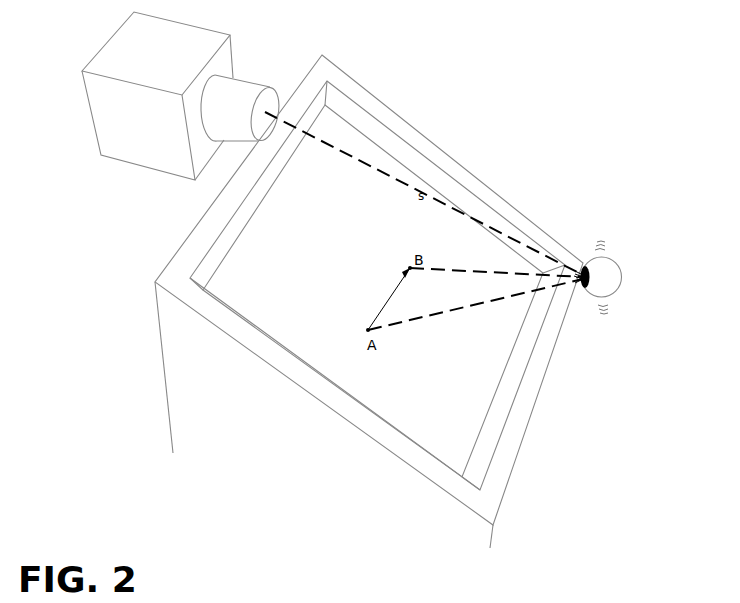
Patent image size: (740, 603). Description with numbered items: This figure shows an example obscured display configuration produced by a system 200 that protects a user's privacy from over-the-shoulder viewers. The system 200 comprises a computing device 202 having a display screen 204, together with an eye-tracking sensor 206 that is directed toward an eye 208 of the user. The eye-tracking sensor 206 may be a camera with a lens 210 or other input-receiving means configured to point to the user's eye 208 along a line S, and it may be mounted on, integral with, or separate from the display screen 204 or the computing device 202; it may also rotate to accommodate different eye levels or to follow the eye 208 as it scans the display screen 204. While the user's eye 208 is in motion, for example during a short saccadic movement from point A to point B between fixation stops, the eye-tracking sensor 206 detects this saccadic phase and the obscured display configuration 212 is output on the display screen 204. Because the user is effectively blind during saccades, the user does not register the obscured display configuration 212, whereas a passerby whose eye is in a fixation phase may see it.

The system 200 is at (601, 100).
The computing device 202 is at (323, 54).
The display screen 204 is at (332, 125).
The eye-tracking sensor 206 is at (193, 32).
The eye 208 is at (621, 268).
The lens 210 is at (262, 88).
The obscured display configuration 212 is at (379, 158).